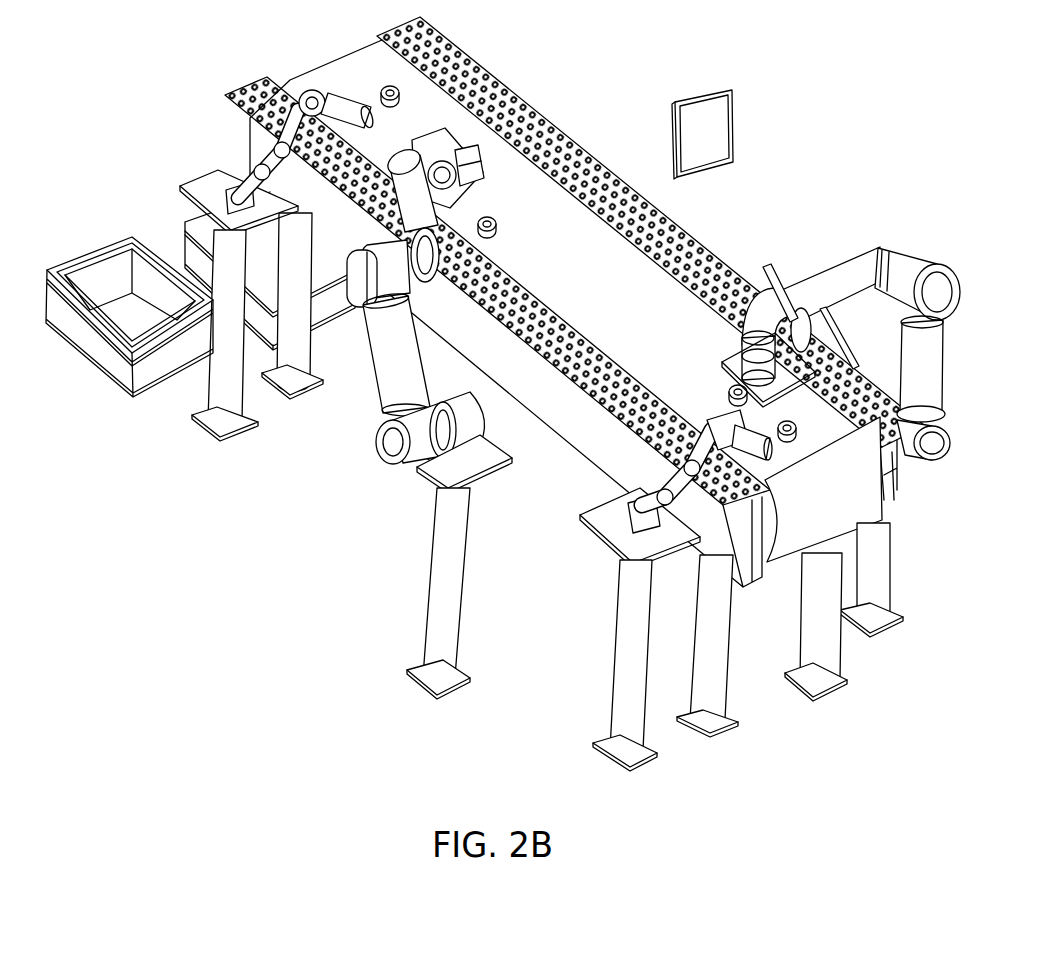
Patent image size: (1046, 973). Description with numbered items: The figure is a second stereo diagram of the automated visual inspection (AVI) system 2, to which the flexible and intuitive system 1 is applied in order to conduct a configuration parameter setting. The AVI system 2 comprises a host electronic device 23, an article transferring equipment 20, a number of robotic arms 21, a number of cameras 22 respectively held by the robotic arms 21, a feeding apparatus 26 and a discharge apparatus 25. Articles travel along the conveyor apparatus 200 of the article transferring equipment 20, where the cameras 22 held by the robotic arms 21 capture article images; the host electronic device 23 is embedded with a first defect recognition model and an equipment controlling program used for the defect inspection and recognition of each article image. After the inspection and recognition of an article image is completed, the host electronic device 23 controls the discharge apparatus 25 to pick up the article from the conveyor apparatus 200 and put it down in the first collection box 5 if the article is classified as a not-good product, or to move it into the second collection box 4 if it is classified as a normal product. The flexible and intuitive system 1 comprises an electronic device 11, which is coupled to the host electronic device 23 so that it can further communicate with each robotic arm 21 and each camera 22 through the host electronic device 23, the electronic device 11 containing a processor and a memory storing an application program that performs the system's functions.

The flexible and intuitive system 1 is at (664, 93).
The automated visual inspection (AVI) system 2 is at (174, 108).
The second collection box 4 is at (195, 248).
The first collection box 5 is at (155, 383).
The electronic device 11 is at (737, 100).
The article transferring equipment 20 is at (470, 53).
The robotic arm 21 is at (388, 443).
The camera 22 is at (797, 387).
The host electronic device 23 is at (788, 270).
The discharge apparatus 25 is at (216, 176).
The feeding apparatus 26 is at (630, 505).
The conveyor apparatus 200 is at (385, 75).